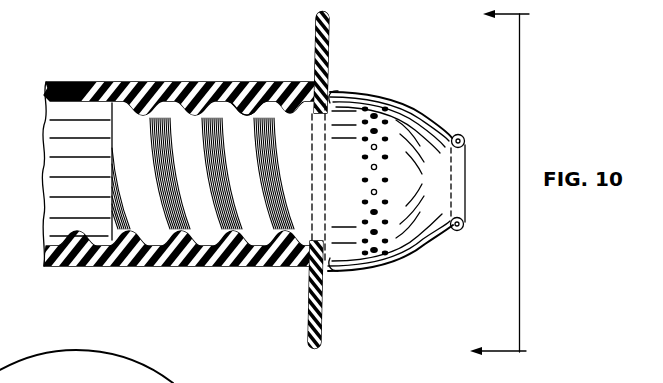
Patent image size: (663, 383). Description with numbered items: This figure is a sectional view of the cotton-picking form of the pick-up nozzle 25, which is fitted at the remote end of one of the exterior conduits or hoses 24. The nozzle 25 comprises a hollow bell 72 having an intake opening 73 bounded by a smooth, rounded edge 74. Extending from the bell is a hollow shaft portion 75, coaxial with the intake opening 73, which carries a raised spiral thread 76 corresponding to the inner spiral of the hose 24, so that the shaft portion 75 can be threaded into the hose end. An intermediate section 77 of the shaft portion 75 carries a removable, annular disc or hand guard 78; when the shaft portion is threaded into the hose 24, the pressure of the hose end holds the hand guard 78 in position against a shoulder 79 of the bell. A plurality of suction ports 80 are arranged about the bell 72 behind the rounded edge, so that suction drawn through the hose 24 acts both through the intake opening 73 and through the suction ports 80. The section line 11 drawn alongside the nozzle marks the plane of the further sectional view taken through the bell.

The section line 11 is at (485, 183).
The hose 24 is at (94, 82).
The pick-up nozzle 25 is at (386, 66).
The hollow bell 72 is at (407, 106).
The intake opening 73 is at (466, 170).
The rounded edge 74 is at (465, 136).
The hollow shaft portion 75 is at (284, 82).
The raised spiral thread 76 is at (206, 82).
The intermediate section 77 is at (316, 122).
The hand guard 78 is at (316, 30).
The shoulder 79 is at (341, 94).
The suction ports 80 is at (371, 169).